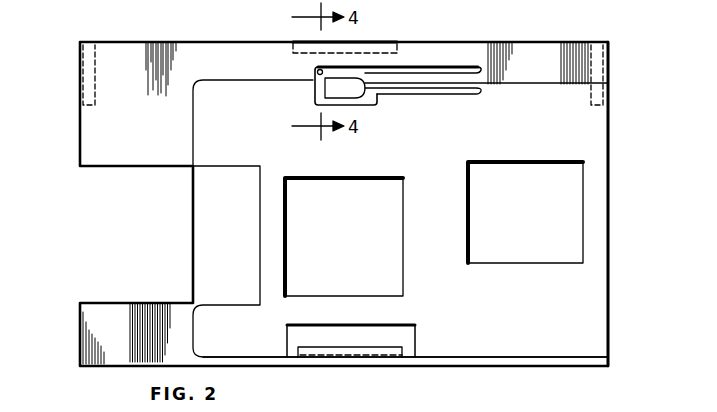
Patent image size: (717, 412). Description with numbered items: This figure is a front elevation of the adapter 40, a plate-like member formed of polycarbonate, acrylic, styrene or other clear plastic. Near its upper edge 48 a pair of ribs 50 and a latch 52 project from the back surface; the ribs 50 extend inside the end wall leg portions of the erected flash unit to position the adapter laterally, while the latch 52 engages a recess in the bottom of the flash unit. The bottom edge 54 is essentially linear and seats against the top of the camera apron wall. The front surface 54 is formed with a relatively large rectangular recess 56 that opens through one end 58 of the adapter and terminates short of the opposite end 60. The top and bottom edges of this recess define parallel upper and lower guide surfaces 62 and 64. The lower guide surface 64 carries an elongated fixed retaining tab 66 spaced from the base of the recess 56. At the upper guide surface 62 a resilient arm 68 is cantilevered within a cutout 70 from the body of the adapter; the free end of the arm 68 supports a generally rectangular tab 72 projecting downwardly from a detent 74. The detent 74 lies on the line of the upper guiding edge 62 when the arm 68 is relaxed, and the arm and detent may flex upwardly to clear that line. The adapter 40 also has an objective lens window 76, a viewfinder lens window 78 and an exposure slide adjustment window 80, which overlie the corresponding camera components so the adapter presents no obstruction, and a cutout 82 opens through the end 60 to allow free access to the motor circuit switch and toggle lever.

The adapter 40 is at (72, 110).
The upper edge 48 is at (527, 36).
The ribs 50 is at (96, 69).
The latch 52 is at (362, 46).
The bottom edge 54 is at (150, 128).
The rectangular recess 56 is at (520, 304).
The one end 58 is at (611, 299).
The opposite end 60 is at (79, 320).
The upper guide surface 62 is at (500, 90).
The lower guide surface 64 is at (534, 357).
The retaining tab 66 is at (397, 352).
The resilient arm 68 is at (426, 78).
The cutout 70 is at (316, 72).
The rectangular tab 72 is at (315, 97).
The detent 74 is at (365, 80).
The objective lens window 76 is at (403, 247).
The viewfinder lens window 78 is at (583, 204).
The exposure slide adjustment window 80 is at (386, 331).
The cutout 82 is at (156, 303).